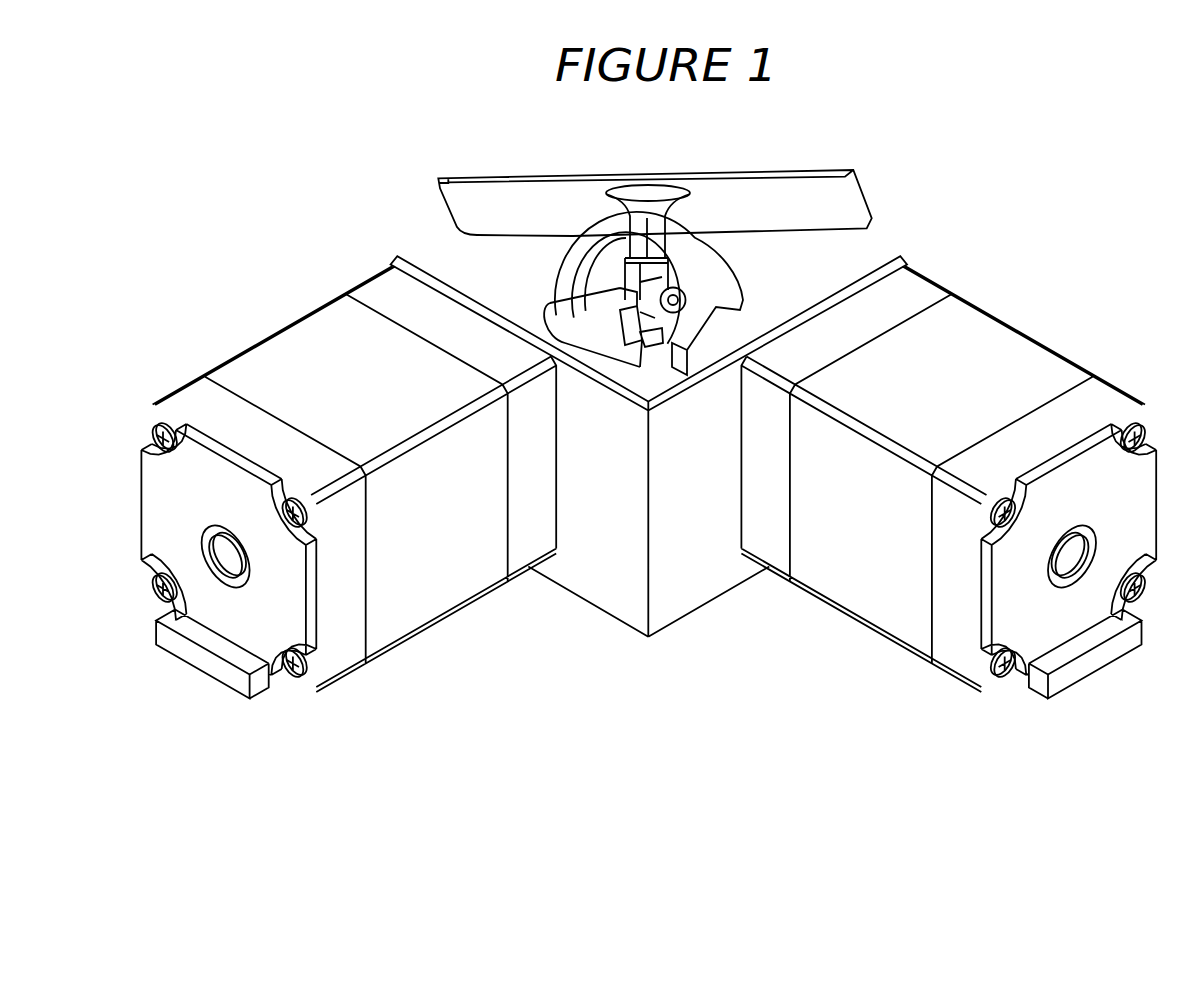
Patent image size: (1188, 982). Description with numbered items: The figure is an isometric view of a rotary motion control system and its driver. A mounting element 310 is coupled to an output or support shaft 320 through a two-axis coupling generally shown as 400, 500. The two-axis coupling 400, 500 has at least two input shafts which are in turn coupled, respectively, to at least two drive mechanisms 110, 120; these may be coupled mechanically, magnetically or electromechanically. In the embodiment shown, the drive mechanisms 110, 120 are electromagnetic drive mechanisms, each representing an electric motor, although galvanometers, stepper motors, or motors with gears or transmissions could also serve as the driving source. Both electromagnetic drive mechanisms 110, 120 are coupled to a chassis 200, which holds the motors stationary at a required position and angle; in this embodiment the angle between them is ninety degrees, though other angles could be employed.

The drive mechanism 110 is at (422, 550).
The drive mechanism 120 is at (848, 565).
The chassis 200 is at (600, 552).
The mounting element 310 is at (827, 207).
The output or support shaft 320 is at (649, 246).
The two-axis coupling 400 is at (720, 288).
The two-axis coupling 500 is at (582, 346).